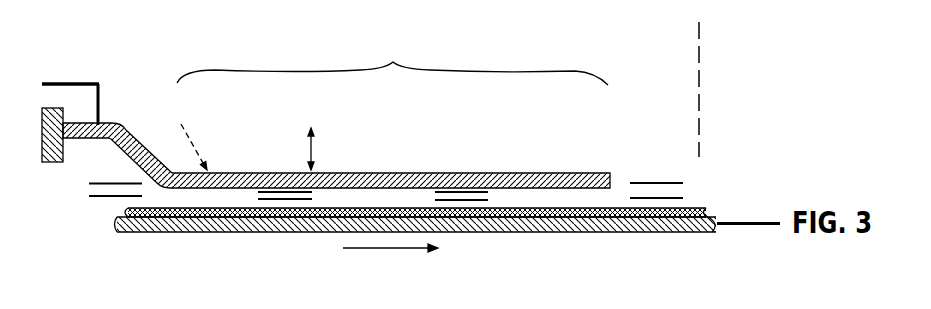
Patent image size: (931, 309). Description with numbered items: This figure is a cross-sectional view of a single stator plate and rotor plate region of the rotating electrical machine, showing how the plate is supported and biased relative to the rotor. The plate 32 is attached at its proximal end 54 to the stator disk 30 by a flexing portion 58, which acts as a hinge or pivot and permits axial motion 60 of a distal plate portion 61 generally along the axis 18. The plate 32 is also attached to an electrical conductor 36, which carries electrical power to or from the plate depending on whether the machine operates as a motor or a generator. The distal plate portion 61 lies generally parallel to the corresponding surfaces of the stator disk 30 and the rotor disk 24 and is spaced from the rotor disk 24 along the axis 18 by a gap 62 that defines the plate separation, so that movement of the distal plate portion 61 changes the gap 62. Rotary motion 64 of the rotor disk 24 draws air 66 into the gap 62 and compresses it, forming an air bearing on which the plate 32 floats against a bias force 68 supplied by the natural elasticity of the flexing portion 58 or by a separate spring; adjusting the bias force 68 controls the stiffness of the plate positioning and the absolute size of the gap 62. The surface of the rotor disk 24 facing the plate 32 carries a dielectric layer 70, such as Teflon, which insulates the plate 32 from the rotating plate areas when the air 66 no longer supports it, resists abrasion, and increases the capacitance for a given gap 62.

The axis 18 is at (698, 77).
The rotor disk 24 is at (638, 233).
The stator disk 30 is at (44, 163).
The plate 32 is at (436, 173).
The electrical conductor 36 is at (59, 83).
The proximal end 54 is at (98, 76).
The flexing portion 58 is at (136, 128).
The axial motion 60 is at (312, 157).
The distal plate portion 61 is at (393, 62).
The gap 62 is at (705, 192).
The rotary motion 64 is at (392, 250).
The air 66 is at (128, 208).
The bias force 68 is at (199, 148).
The dielectric layer 70 is at (550, 233).